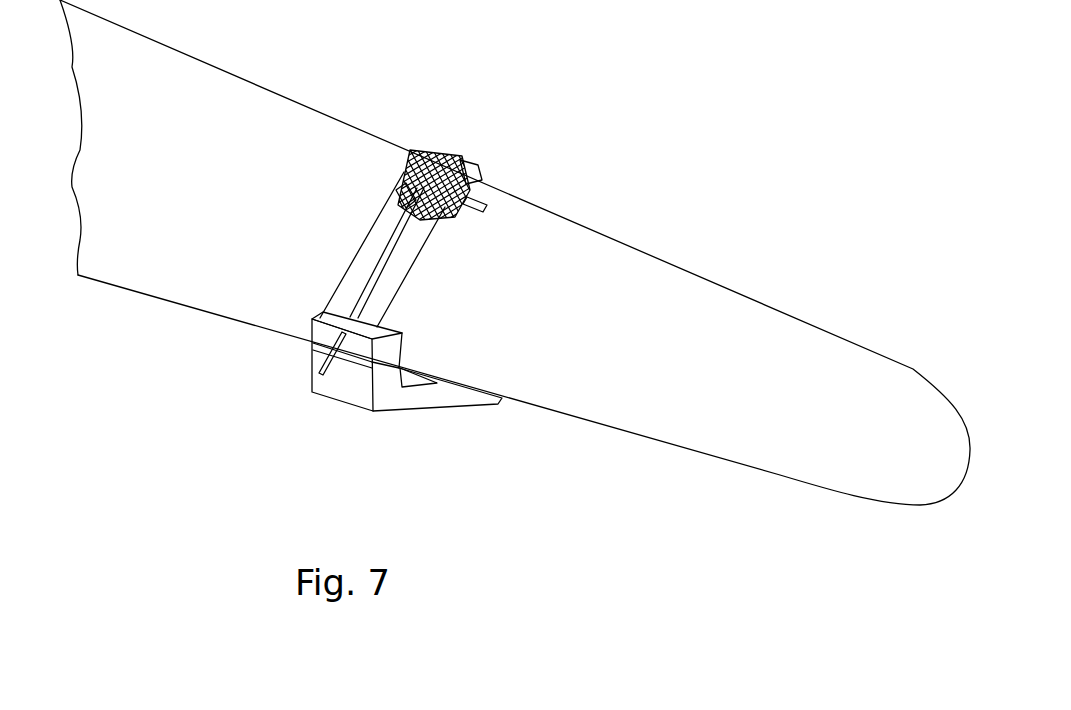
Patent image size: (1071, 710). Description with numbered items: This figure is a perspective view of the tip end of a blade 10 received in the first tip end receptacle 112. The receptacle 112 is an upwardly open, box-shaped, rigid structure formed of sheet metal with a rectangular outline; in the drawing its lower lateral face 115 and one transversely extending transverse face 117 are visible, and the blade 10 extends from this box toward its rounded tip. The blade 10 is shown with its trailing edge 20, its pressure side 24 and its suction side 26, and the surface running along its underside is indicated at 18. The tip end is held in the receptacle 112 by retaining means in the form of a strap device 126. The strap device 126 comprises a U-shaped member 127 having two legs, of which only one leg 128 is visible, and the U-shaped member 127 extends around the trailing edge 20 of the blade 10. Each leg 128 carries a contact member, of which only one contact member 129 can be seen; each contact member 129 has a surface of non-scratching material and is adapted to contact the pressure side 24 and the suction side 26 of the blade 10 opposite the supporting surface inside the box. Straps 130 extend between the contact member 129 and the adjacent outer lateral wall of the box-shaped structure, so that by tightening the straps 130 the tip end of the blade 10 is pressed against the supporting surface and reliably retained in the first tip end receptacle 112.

The blade 10 is at (680, 236).
The lower wing surface 18 is at (643, 442).
The trailing edge 20 is at (707, 278).
The pressure side 24 is at (622, 260).
The suction side 26 is at (803, 313).
The first tip end receptacle 112 is at (435, 276).
The lateral face 115 is at (340, 393).
The transverse face 117 is at (388, 398).
The strap device 126 is at (452, 130).
The U-shaped member 127 is at (471, 160).
The leg 128 is at (408, 155).
The contact member 129 is at (487, 190).
The straps 130 is at (358, 238).